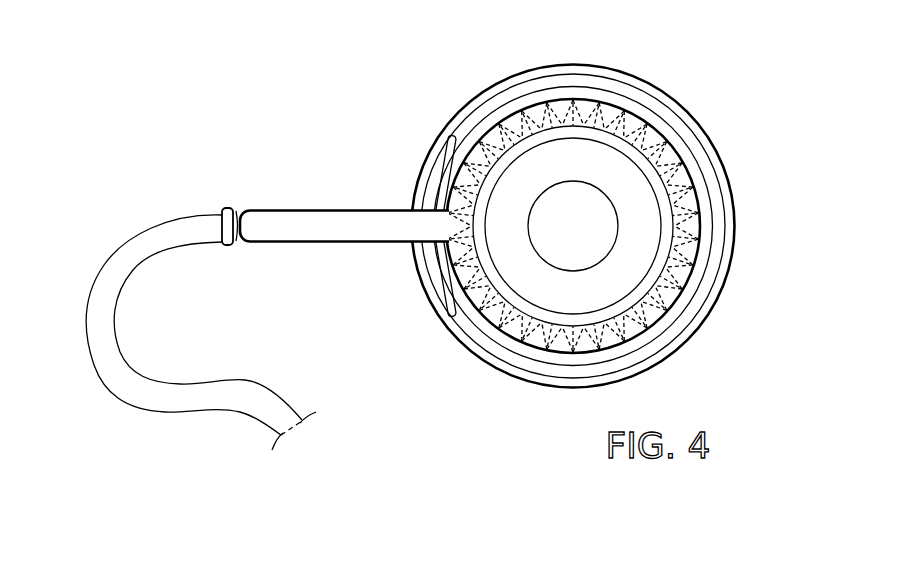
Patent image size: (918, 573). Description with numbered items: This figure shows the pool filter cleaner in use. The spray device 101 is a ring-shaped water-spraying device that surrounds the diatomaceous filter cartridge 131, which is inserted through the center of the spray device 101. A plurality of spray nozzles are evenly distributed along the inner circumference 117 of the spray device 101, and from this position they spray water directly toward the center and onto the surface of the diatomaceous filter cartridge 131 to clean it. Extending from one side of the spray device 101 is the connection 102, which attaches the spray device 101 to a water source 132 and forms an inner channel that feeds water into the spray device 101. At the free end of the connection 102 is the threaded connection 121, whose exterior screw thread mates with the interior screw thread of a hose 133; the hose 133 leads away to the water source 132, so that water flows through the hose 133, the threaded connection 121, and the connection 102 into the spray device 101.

The spray device 101 is at (577, 63).
The connection 102 is at (303, 222).
The inner circumference 117 is at (700, 228).
The threaded connection 121 is at (232, 248).
The diatomaceous filter cartridge 131 is at (667, 210).
The water source 132 is at (303, 437).
The hose 133 is at (158, 410).